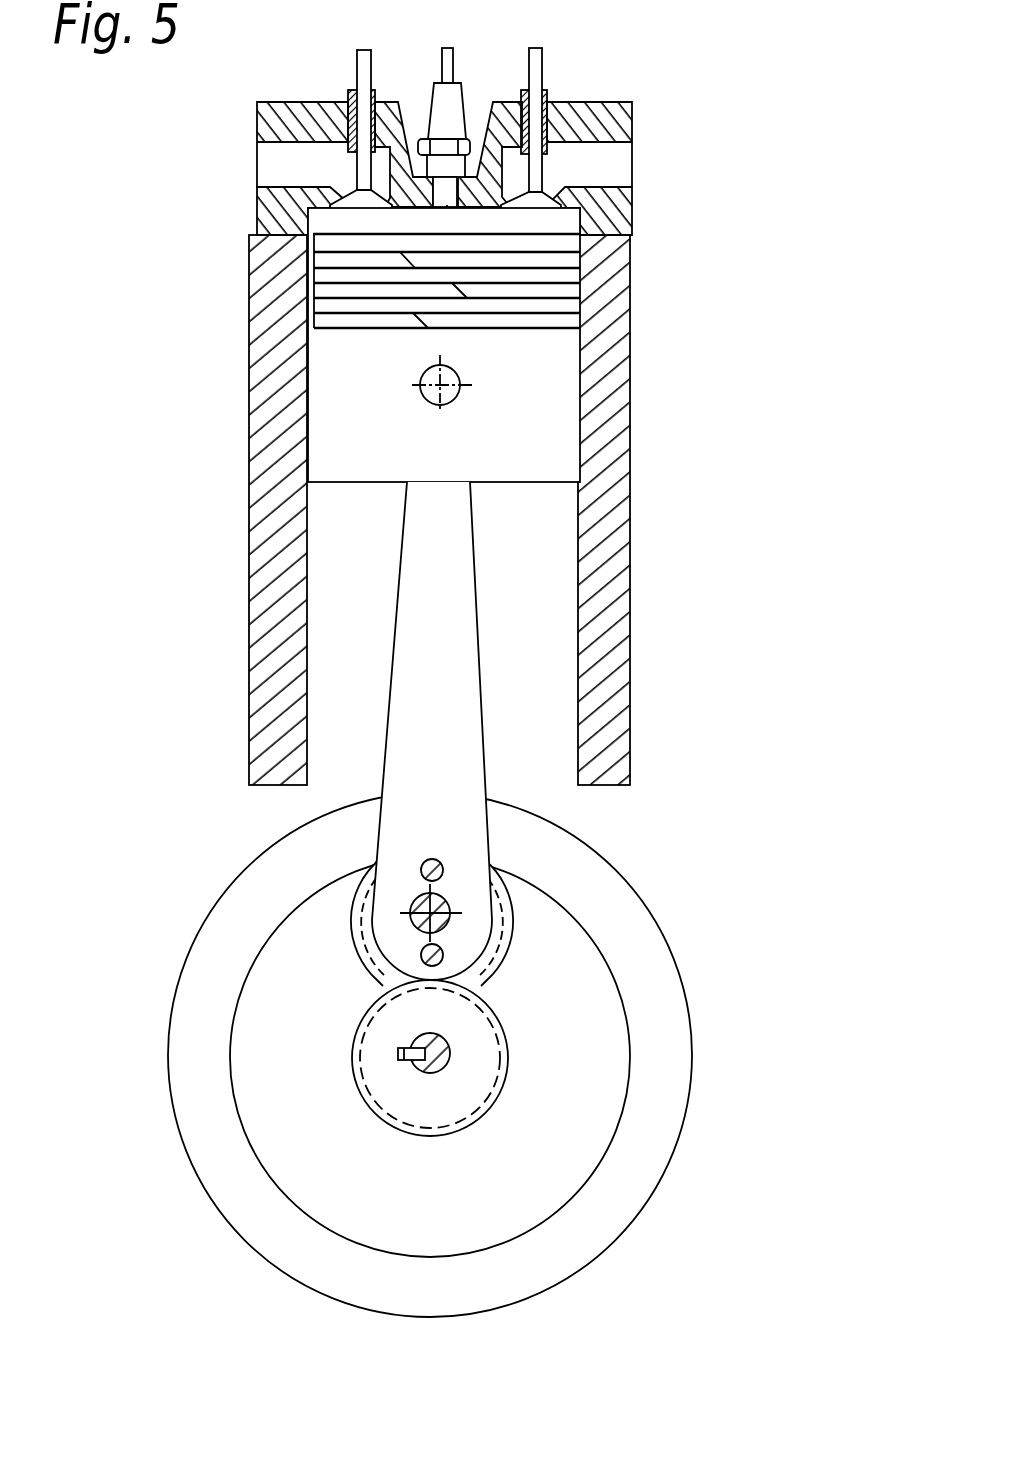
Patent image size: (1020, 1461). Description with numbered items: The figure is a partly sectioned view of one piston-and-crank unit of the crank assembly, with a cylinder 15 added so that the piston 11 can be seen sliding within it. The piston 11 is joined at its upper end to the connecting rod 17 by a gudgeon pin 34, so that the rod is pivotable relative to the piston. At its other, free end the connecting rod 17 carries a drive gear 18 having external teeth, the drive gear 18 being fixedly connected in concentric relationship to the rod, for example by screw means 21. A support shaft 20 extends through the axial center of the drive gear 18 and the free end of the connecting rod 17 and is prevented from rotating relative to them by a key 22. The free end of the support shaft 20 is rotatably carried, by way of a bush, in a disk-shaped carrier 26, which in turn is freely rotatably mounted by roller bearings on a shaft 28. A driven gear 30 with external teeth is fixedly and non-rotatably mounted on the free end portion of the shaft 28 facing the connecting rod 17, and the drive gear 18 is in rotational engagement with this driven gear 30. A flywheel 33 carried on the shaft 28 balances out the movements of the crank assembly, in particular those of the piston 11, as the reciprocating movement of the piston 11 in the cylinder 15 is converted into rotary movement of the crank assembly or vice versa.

The piston 11 is at (528, 440).
The cylinder 15 is at (608, 357).
The connecting rod 17 is at (443, 820).
The drive gear 18 is at (380, 963).
The support shaft 20 is at (447, 923).
The screw means 21 is at (442, 878).
The key 22 is at (412, 1054).
The carrier 26 is at (308, 935).
The shaft 28 is at (450, 1060).
The driven gear 30 is at (385, 1075).
The flywheel 33 is at (597, 1213).
The gudgeon pin 34 is at (427, 377).